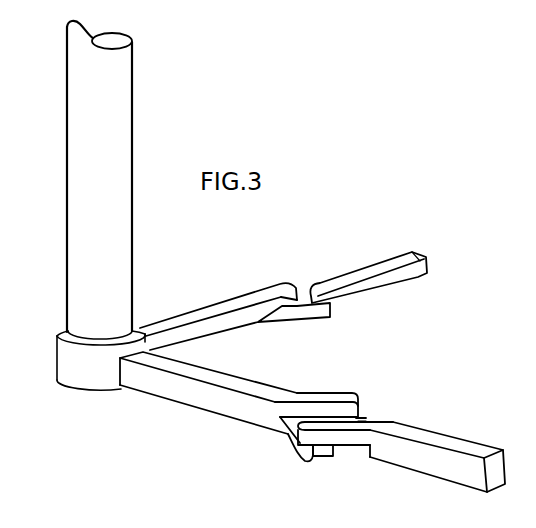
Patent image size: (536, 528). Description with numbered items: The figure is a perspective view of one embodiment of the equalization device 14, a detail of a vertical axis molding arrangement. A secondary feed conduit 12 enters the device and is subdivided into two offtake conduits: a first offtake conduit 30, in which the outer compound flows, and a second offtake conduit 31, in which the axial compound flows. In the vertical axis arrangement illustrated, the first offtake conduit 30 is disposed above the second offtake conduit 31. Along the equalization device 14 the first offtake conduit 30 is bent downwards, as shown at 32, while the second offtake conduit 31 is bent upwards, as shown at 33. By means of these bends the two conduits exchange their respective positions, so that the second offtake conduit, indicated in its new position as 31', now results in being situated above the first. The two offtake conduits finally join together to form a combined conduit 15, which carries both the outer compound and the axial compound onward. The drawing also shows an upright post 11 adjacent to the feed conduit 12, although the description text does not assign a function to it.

The upright post 11 is at (70, 114).
The secondary feed conduit 12 is at (187, 397).
The equalization device 14 is at (286, 458).
The combined conduit 15 is at (413, 447).
The first offtake conduit 30 is at (322, 398).
The second offtake conduit 31 is at (265, 439).
The second offtake conduit 31' is at (382, 481).
The downward bend 32 is at (362, 418).
The upward bend 33 is at (313, 443).